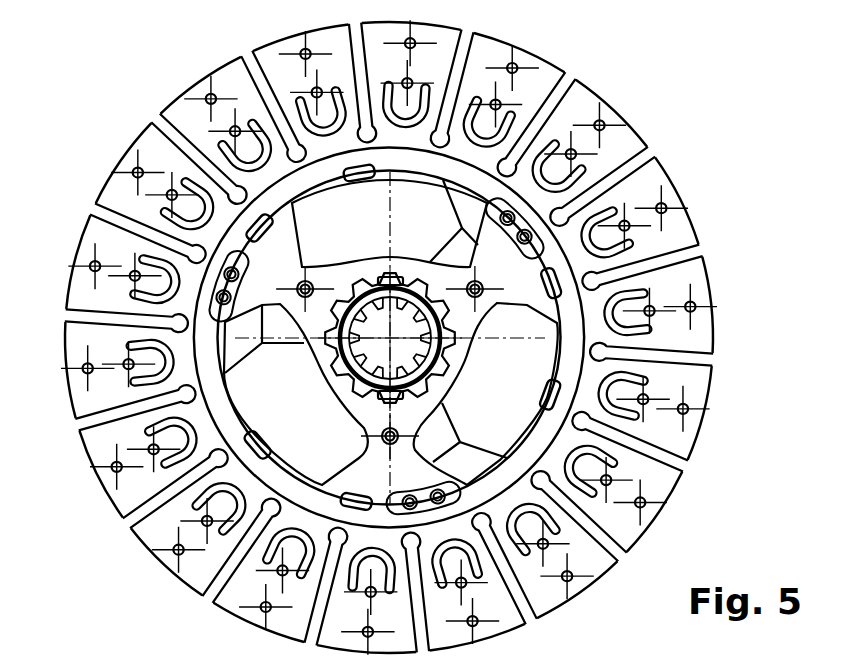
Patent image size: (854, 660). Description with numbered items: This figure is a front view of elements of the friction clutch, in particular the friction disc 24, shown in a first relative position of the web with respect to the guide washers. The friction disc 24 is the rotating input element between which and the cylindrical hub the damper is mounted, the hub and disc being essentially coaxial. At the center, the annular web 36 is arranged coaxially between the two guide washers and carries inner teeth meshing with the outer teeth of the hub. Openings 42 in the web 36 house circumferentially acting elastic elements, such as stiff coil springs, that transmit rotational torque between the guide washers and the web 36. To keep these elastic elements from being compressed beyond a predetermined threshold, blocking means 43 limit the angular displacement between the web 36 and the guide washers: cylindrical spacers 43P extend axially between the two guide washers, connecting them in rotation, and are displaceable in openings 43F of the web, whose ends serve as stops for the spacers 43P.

The friction disc 24 is at (552, 66).
The annular web 36 is at (88, 455).
The opening 42 is at (345, 452).
The blocking means 43 is at (560, 263).
The cylindrical spacer 43P is at (512, 214).
The opening of the web 43F is at (533, 298).